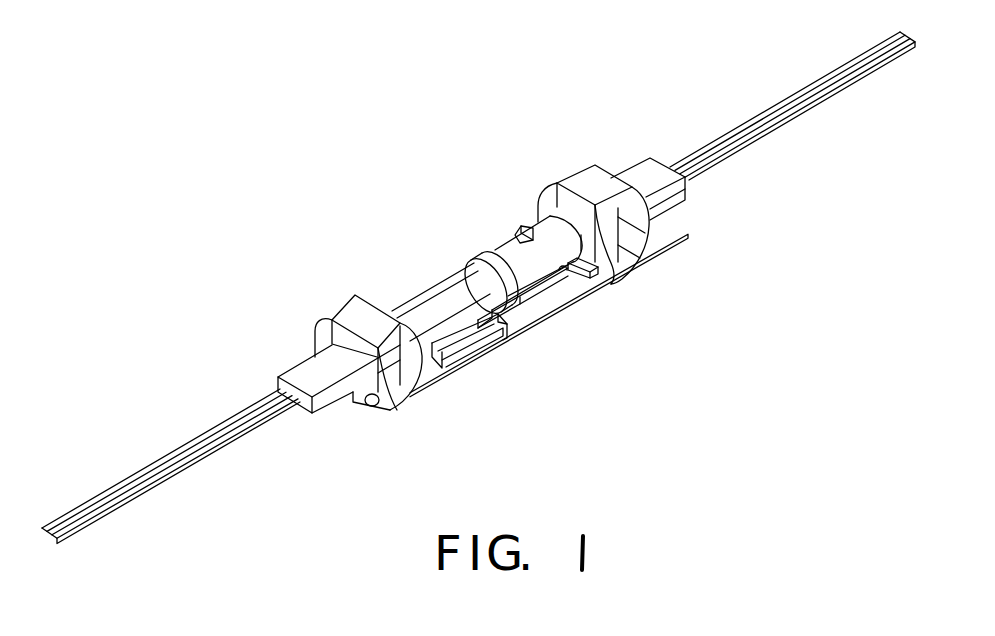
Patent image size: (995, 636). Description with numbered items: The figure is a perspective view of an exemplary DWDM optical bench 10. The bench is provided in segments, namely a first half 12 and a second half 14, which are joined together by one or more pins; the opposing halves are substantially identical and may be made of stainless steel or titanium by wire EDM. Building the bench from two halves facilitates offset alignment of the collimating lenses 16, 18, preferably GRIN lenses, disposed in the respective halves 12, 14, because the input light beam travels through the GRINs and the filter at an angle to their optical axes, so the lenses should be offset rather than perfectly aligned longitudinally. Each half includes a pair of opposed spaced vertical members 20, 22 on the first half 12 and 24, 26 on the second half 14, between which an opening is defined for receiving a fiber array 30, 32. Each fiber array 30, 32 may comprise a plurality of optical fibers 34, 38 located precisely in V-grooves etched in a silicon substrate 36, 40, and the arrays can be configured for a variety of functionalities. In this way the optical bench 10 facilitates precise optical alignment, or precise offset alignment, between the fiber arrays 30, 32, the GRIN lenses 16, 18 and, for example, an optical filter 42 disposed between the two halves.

The optical bench 10 is at (366, 186).
The first half 12 is at (457, 373).
The second half 14 is at (577, 304).
The collimating lens 16 is at (437, 295).
The collimating lens 18 is at (518, 247).
The vertical member 20 is at (322, 315).
The vertical member 22 is at (398, 408).
The vertical member 24 is at (541, 170).
The vertical member 26 is at (633, 220).
The fiber array 30 is at (190, 430).
The fiber array 32 is at (706, 122).
The optical fibers 34 is at (73, 510).
The silicon substrate 36 is at (282, 372).
The optical fibers 38 is at (823, 78).
The silicon substrate 40 is at (632, 163).
The optical filter 42 is at (468, 266).